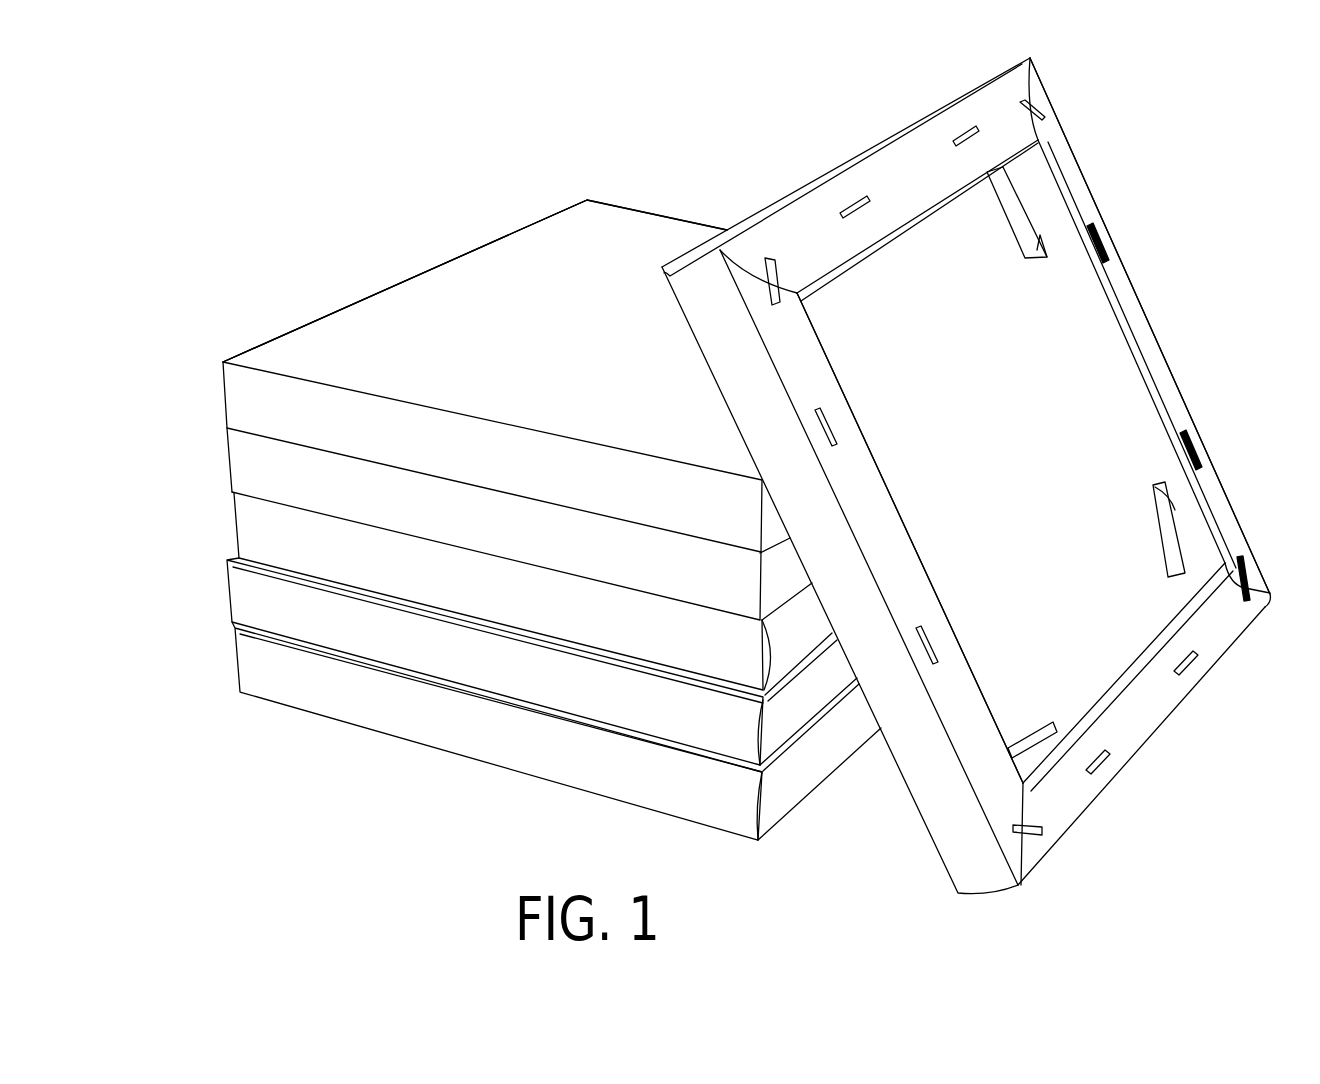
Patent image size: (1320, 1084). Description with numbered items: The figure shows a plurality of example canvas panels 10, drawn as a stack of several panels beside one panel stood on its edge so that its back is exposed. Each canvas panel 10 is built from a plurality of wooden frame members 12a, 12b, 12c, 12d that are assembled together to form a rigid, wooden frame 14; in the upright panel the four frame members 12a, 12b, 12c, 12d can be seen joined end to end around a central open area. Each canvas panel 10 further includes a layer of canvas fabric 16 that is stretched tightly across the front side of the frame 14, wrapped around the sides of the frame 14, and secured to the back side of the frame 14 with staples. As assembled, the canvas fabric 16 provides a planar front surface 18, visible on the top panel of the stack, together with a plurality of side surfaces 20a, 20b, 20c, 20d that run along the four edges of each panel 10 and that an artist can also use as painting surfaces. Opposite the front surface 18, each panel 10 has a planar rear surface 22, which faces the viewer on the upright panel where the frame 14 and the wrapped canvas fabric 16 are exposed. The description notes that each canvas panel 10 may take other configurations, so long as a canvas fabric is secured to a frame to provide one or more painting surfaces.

The canvas panel 10 is at (233, 410).
The wooden frame member 12a is at (1076, 360).
The wooden frame member 12b is at (1107, 652).
The wooden frame member 12c is at (917, 540).
The wooden frame member 12d is at (877, 253).
The wooden frame 14 is at (1120, 324).
The canvas fabric 16 is at (372, 306).
The planar front surface 18 is at (509, 275).
The side surface 20a is at (1242, 486).
The side surface 20b is at (1153, 757).
The side surface 20c is at (908, 796).
The side surface 20d is at (818, 164).
The planar rear surface 22 is at (932, 581).